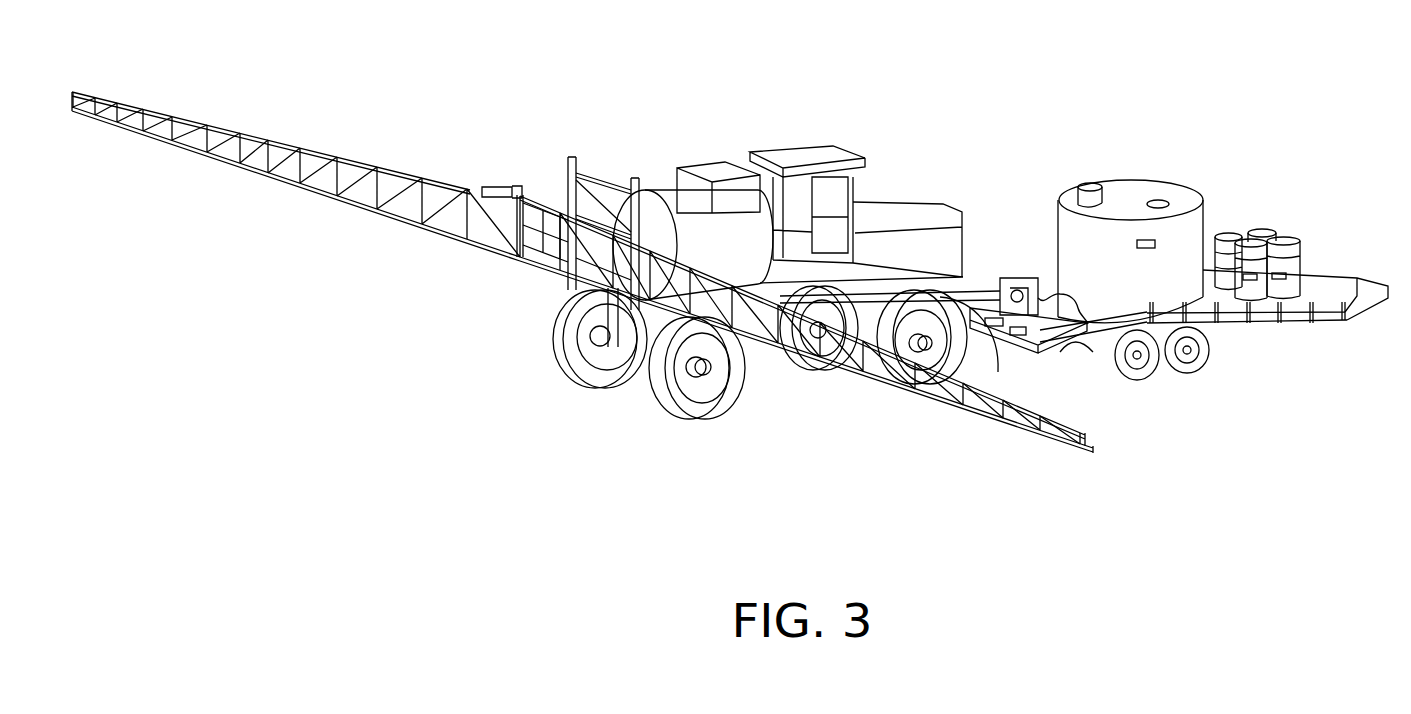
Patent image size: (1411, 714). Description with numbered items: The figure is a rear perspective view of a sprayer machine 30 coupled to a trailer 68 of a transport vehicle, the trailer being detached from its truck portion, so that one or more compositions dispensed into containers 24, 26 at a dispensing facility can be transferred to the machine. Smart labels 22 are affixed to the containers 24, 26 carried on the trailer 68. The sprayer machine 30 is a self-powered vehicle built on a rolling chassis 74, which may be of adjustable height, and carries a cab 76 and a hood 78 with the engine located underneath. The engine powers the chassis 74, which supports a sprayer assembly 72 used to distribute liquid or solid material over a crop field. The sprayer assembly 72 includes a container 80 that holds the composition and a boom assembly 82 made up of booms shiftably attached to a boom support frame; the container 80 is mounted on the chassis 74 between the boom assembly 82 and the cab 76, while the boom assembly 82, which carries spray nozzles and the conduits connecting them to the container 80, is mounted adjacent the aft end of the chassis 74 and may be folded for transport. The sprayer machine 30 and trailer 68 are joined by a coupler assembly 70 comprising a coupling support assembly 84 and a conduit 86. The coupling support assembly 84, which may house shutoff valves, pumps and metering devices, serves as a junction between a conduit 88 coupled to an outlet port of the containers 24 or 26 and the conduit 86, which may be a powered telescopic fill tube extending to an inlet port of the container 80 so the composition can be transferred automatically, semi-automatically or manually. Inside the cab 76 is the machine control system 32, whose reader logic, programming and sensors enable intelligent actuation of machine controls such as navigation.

The smart labels 22 is at (1146, 250).
The container 24 is at (1130, 188).
The container 26 is at (1261, 226).
The sprayer machine 30 is at (513, 102).
The machine control system 32 is at (810, 157).
The trailer 68 is at (1340, 249).
The coupler assembly 70 is at (1005, 262).
The sprayer assembly 72 is at (244, 180).
The rolling chassis 74 is at (541, 303).
The cab 76 is at (834, 152).
The hood 78 is at (908, 200).
The container 80 is at (655, 190).
The boom assembly 82 is at (427, 230).
The coupling support assembly 84 is at (1020, 275).
The conduit 86 is at (978, 345).
The conduit 88 is at (1092, 352).